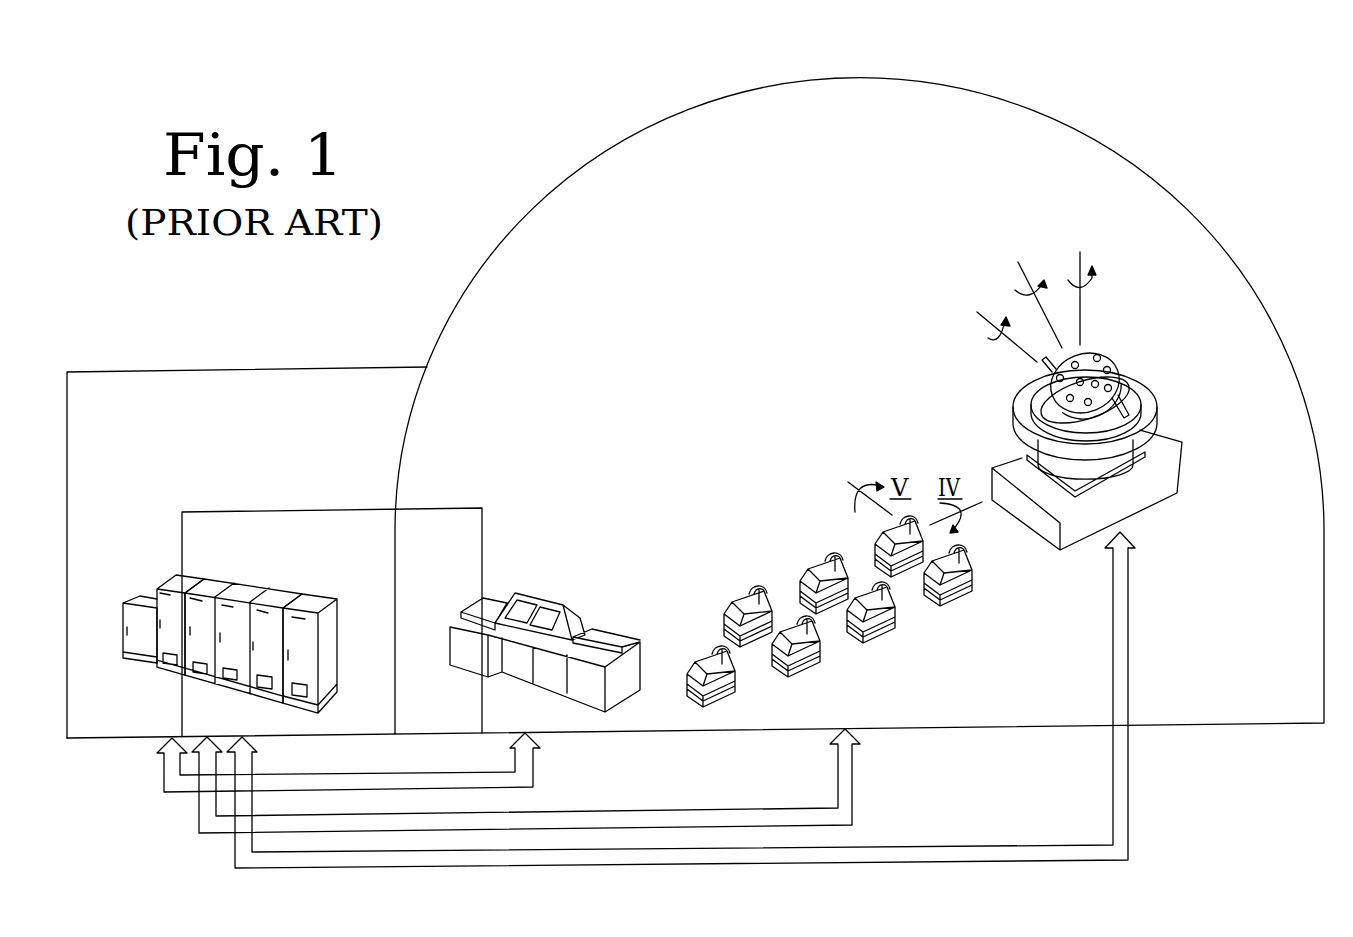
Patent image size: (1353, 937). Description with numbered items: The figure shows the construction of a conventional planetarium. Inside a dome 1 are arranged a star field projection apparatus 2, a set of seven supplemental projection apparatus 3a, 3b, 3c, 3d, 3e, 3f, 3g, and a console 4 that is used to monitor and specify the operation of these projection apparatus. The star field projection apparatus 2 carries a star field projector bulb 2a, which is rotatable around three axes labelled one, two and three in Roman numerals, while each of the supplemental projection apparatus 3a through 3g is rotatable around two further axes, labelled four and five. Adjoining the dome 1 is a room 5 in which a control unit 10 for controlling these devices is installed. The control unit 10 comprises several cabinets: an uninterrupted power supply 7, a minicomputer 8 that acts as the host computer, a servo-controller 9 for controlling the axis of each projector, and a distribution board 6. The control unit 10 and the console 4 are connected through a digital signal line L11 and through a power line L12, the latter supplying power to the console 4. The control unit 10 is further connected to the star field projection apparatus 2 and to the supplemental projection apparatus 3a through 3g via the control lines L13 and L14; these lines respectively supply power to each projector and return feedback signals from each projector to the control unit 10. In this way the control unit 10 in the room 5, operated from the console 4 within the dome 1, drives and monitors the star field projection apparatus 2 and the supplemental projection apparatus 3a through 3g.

The dome 1 is at (857, 77).
The star field projection apparatus 2 is at (1078, 395).
The star field projector bulb 2a is at (1115, 315).
The supplemental projection apparatus 3a is at (877, 547).
The supplemental projection apparatus 3b is at (968, 604).
The supplemental projection apparatus 3c is at (890, 634).
The supplemental projection apparatus 3d is at (800, 585).
The supplemental projection apparatus 3e is at (726, 620).
The supplemental projection apparatus 3f is at (817, 670).
The supplemental projection apparatus 3g is at (728, 702).
The console 4 is at (581, 622).
The room 5 is at (228, 370).
The distribution board 6 is at (336, 598).
The uninterrupted power supply 7 is at (138, 597).
The minicomputer 8 is at (175, 582).
The servo-controller 9 is at (265, 585).
The control unit 10 is at (217, 572).
The digital signal line L11 is at (298, 510).
The power line L12 is at (536, 768).
The control line L13 is at (855, 766).
The control line L14 is at (1131, 760).